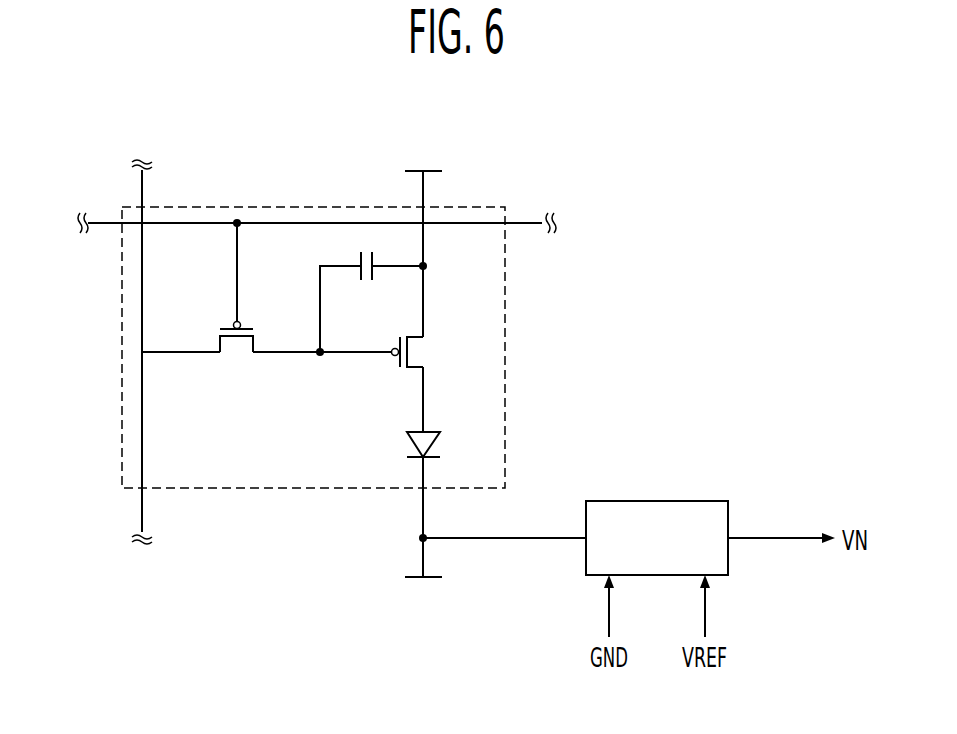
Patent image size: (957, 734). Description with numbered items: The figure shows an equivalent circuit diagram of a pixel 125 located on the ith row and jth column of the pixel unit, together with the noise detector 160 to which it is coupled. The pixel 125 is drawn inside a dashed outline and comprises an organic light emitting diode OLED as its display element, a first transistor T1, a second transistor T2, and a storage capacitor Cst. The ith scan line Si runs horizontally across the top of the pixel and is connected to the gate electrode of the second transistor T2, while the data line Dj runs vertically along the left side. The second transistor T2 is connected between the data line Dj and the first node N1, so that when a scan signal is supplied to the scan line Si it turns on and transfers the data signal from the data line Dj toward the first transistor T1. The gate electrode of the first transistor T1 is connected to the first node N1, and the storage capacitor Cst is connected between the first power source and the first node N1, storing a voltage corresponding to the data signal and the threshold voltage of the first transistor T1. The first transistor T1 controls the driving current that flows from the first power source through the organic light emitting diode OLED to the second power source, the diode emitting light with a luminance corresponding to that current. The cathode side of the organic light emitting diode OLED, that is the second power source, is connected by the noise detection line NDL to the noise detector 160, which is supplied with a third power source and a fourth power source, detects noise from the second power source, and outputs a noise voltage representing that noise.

The pixel 125 is at (354, 374).
The noise detector 160 is at (712, 500).
The first transistor T1 is at (417, 354).
The second transistor T2 is at (236, 352).
The storage capacitor Cst is at (386, 283).
The organic light emitting diode OLED is at (449, 445).
The first node N1 is at (336, 328).
The noise detection line NDL is at (504, 556).
The ith scan line Si is at (306, 223).
The data line Dj is at (142, 333).